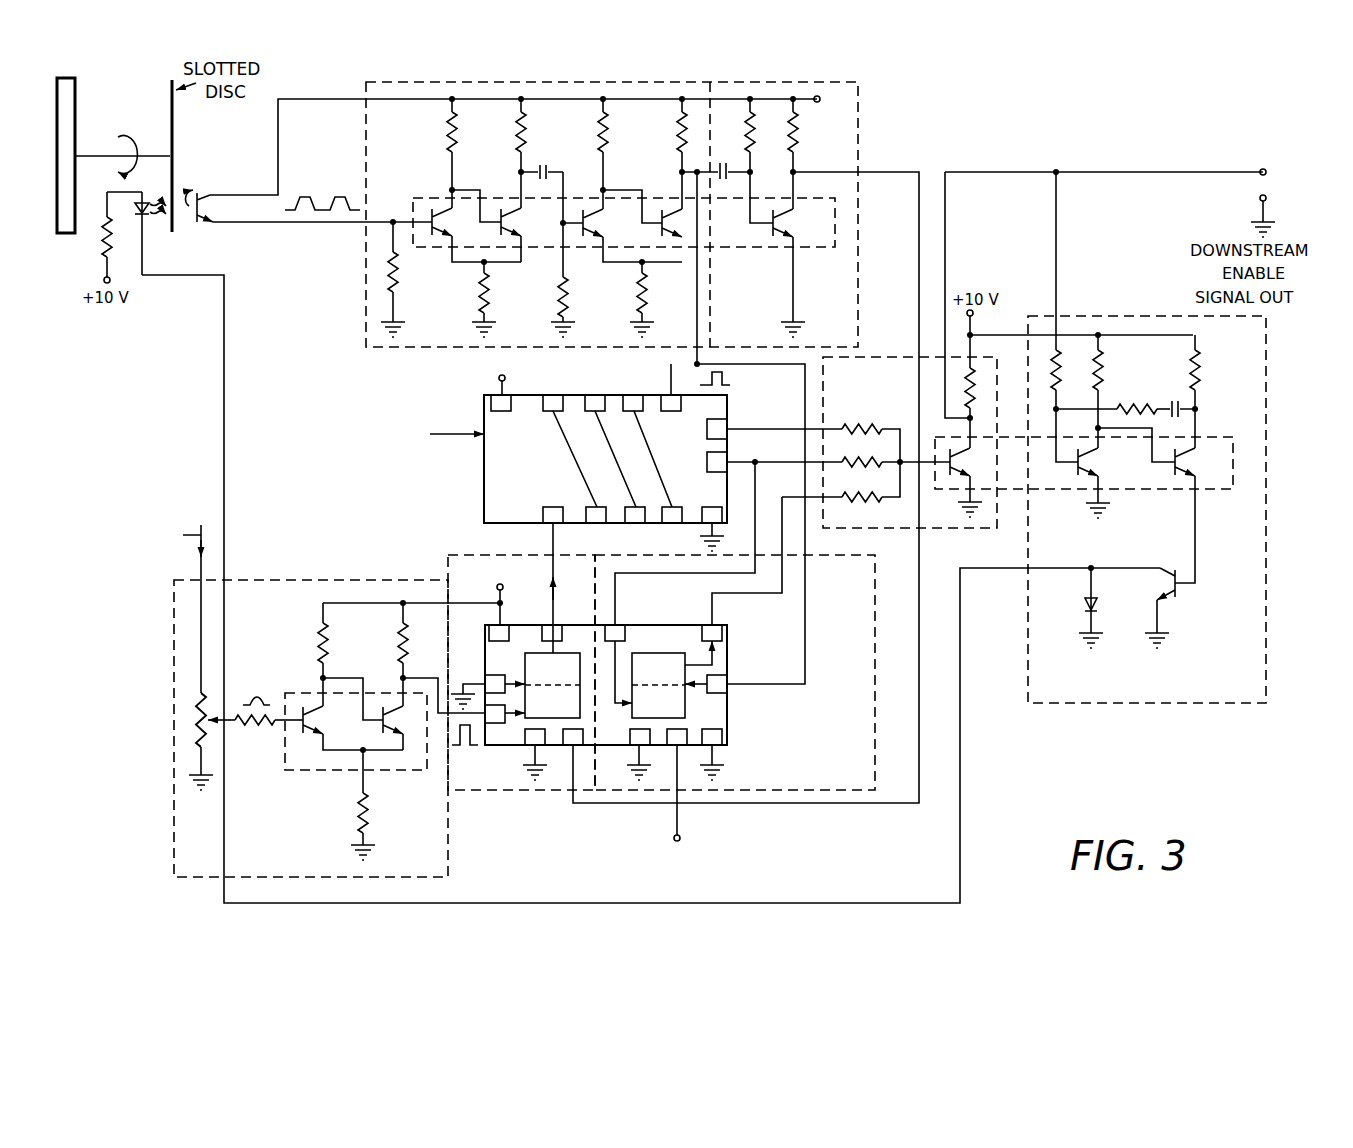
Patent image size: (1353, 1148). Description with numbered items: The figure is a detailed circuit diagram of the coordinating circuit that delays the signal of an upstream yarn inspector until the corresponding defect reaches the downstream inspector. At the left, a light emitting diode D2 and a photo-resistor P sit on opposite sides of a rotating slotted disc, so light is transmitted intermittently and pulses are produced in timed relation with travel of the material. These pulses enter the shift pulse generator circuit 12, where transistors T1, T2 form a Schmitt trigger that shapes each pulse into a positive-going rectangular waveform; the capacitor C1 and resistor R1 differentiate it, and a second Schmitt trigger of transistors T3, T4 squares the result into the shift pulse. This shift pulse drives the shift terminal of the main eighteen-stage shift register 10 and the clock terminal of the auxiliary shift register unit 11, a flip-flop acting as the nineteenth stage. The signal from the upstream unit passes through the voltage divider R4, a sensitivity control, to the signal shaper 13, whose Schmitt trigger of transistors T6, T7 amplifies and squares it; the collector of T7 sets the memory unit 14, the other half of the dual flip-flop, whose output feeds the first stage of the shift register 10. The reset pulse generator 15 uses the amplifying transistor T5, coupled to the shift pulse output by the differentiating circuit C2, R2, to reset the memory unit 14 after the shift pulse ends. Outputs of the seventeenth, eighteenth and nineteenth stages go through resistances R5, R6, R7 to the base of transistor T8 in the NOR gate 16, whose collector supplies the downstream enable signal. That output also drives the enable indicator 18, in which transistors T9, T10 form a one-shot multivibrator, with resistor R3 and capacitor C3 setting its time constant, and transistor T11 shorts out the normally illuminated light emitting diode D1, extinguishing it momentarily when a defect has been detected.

The shift register 10 is at (484, 488).
The auxiliary shift register unit 11 is at (875, 640).
The shift pulse generator circuit 12 is at (450, 350).
The signal shaper 13 is at (293, 580).
The storage or memory unit 14 is at (448, 560).
The reset pulse generator 15 is at (835, 82).
The NOR gate 16 is at (877, 357).
The enable indicator 18 is at (1266, 573).
The photo-resistor P is at (199, 196).
The light emitting diode D2 is at (144, 224).
The light emitting diode D1 is at (1083, 612).
The transistor T1 is at (430, 211).
The transistor T2 is at (521, 223).
The transistor T3 is at (604, 223).
The transistor T4 is at (660, 212).
The amplifying transistor T5 is at (794, 224).
The transistor T6 is at (324, 721).
The transistor T7 is at (403, 721).
The transistor T8 is at (971, 482).
The transistor T9 is at (1102, 483).
The transistor T10 is at (1199, 515).
The transistor T11 is at (1173, 575).
The resistor R1 is at (566, 285).
The resistor R2 is at (742, 163).
The resistor R3 is at (1143, 393).
The voltage divider R4 is at (199, 718).
The resistance R5 is at (871, 429).
The resistance R6 is at (896, 449).
The resistance R7 is at (871, 482).
The capacitor C1 is at (539, 170).
The capacitor C2 is at (719, 170).
The capacitor C3 is at (1176, 395).